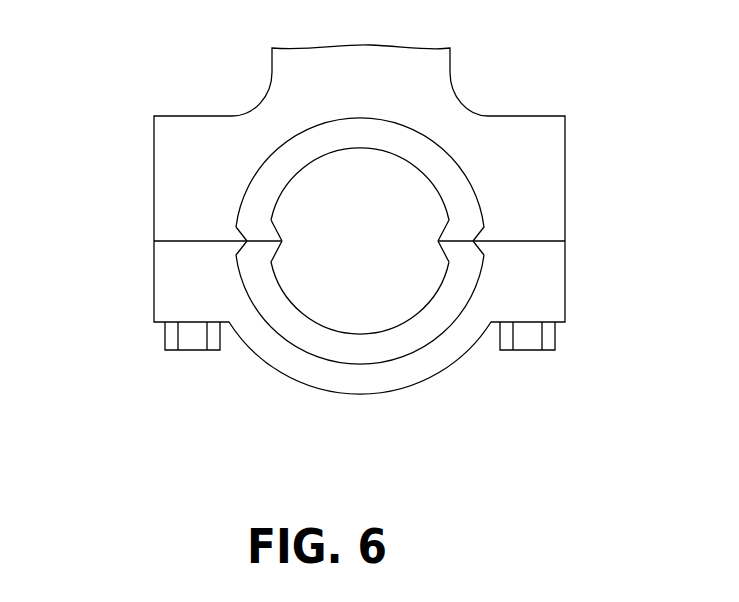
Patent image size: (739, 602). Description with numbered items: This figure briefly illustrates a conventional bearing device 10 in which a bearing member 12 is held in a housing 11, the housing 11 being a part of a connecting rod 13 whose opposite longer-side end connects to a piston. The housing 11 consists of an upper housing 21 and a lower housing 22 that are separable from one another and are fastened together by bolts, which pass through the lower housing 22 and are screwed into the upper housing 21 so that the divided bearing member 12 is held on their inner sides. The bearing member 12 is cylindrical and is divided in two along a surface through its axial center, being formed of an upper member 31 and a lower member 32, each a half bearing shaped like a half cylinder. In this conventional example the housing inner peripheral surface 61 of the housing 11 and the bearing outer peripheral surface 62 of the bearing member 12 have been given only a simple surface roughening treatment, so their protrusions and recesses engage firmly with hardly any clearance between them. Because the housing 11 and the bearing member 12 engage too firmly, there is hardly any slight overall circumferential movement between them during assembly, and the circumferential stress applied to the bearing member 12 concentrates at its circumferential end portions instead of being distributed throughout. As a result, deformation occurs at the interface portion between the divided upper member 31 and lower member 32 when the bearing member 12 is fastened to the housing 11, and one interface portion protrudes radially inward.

The bearing device 10 is at (542, 90).
The housing 11 is at (133, 130).
The bearing member 12 is at (282, 121).
The connecting rod 13 is at (455, 70).
The upper housing 21 is at (175, 190).
The lower housing 22 is at (172, 281).
The upper member 31 is at (463, 198).
The lower member 32 is at (400, 343).
The housing inner peripheral surface 61 is at (281, 337).
The bearing outer peripheral surface 62 is at (268, 150).